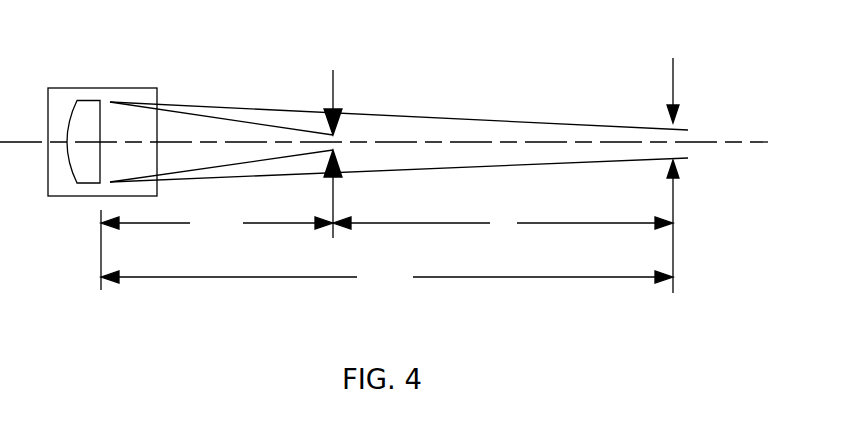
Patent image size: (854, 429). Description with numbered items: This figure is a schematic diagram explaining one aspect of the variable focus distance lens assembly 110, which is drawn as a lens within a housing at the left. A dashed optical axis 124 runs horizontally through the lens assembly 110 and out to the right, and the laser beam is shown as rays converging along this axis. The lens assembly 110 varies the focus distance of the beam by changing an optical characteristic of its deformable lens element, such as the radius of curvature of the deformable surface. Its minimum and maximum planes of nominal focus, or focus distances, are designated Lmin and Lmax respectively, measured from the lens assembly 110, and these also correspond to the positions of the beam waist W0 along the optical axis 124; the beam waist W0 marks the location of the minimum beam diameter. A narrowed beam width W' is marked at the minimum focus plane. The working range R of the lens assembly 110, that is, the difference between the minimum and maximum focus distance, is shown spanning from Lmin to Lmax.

The variable focus distance lens assembly 110 is at (90, 100).
The optical axis 124 is at (723, 142).
The beam width at focus W' is at (338, 140).
The laser beam waist W0 is at (676, 162).
The minimum plane of nominal focus Lmin is at (217, 225).
The working range R is at (503, 224).
The maximum plane of nominal focus Lmax is at (387, 280).